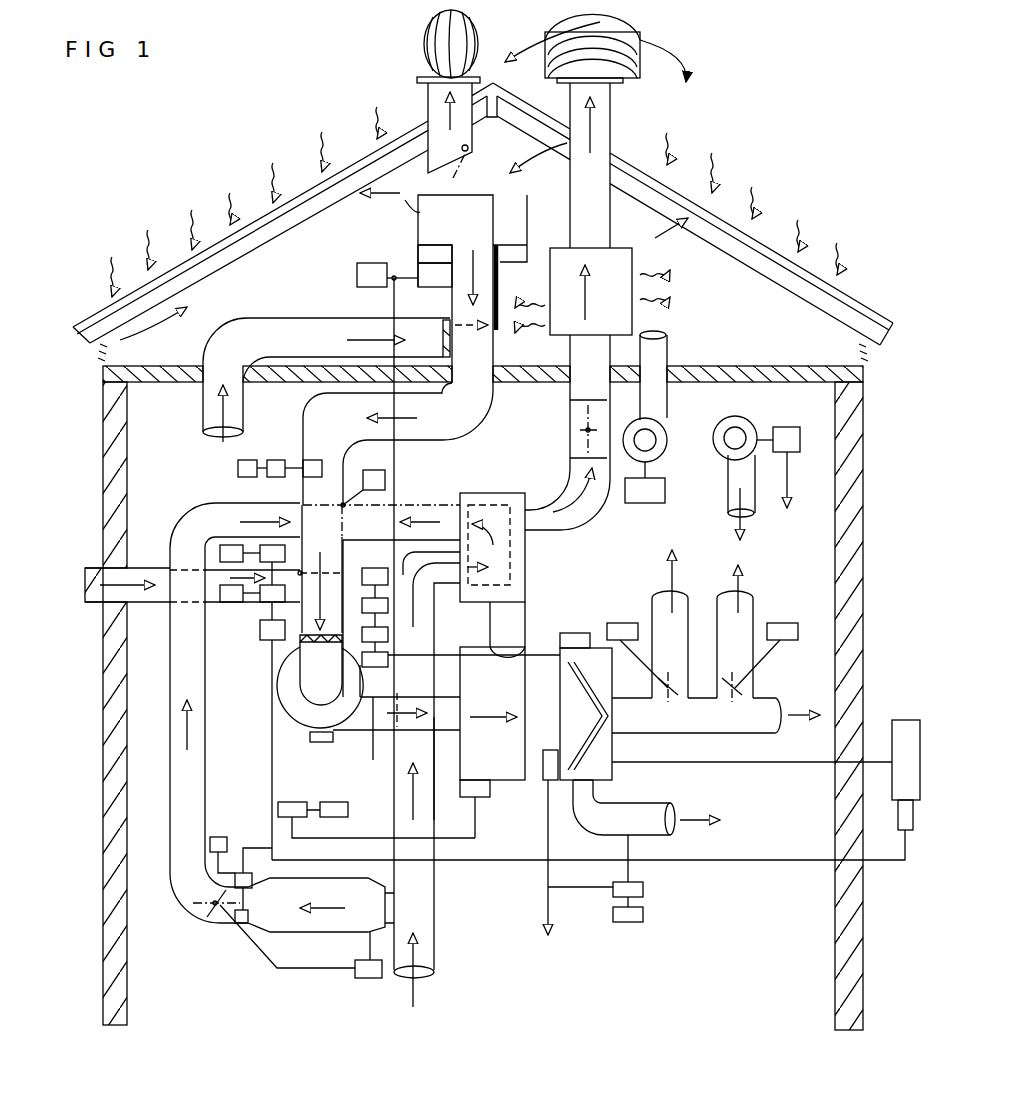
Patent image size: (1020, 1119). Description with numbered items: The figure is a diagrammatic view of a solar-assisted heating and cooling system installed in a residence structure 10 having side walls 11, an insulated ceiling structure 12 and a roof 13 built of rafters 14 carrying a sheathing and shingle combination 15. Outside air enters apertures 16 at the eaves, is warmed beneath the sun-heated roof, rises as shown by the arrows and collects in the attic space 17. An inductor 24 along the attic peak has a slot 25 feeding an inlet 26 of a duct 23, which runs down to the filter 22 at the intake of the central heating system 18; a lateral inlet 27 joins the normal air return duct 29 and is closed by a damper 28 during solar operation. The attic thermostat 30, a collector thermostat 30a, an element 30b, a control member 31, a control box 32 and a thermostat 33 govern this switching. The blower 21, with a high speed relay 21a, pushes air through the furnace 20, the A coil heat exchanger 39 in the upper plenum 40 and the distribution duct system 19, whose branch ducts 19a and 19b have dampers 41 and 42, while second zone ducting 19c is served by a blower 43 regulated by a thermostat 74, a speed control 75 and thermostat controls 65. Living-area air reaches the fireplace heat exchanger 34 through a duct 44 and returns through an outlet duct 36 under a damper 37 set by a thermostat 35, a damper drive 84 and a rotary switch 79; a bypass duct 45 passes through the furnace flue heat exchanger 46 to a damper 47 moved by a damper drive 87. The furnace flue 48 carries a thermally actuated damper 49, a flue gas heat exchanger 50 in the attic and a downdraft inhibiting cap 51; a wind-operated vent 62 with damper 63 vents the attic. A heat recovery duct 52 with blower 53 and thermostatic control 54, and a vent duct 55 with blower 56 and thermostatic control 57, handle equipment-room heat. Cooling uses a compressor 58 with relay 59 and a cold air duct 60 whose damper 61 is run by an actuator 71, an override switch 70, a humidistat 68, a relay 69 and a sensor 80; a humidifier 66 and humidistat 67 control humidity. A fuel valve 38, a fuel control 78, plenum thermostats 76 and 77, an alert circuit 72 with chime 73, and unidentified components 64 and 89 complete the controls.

The residence structure 10 is at (292, 115).
The side walls 11 is at (103, 455).
The ceiling structure 12 is at (740, 366).
The roof 13 is at (807, 262).
The rafters 14 is at (688, 230).
The sheathing and shingle combination 15 is at (252, 215).
The apertures 16 is at (95, 355).
The attic space 17 is at (289, 298).
The central heating system 18 is at (532, 832).
The distribution duct system 19 is at (755, 698).
The branch duct 19a is at (753, 600).
The branch duct 19b is at (652, 600).
The second zone ducting 19c is at (655, 835).
The furnace 20 is at (501, 761).
The blower 21 is at (303, 720).
The high speed relay 21a is at (330, 745).
The filter 22 is at (334, 685).
The duct 23 is at (480, 422).
The inductor 24 is at (390, 198).
The slot 25 is at (523, 228).
The inlet 26 is at (469, 238).
The lateral inlet 27 is at (450, 345).
The damper 28 is at (445, 332).
The normal air return duct 29 is at (304, 351).
The temperature sensing and control device 30 is at (418, 280).
The thermostat 30a is at (432, 250).
The damper blade 30b is at (432, 270).
The control member 31 is at (357, 275).
The control box 32 is at (412, 625).
The thermostat 33 is at (512, 265).
The fireplace heat exchanger 34 is at (334, 903).
The thermostat 35 is at (238, 873).
The outlet duct 36 is at (168, 815).
The damper 37 is at (222, 910).
The fossil fuel valve 38 is at (485, 797).
The A coil heat exchanger 39 is at (603, 765).
The upper plenum 40 is at (604, 685).
The damper 41 is at (670, 695).
The damper 42 is at (735, 695).
The blower 43 is at (592, 835).
The duct 44 is at (435, 937).
The bypass duct 45 is at (435, 820).
The furnace flue heat exchanger 46 is at (525, 580).
The damper 47 is at (381, 521).
The furnace flue 48 is at (578, 530).
The thermally actuated damper 49 is at (570, 455).
The flue gas heat exchanger 50 is at (624, 313).
The downdraft inhibiting cap 51 is at (645, 45).
The duct 52 is at (727, 495).
The blower 53 is at (742, 422).
The thermostatic control 54 is at (787, 427).
The duct 55 is at (667, 350).
The blower 56 is at (660, 440).
The thermostatic control 57 is at (665, 490).
The air conditioning compressor 58 is at (921, 765).
The compressor relay 59 is at (913, 815).
The cold air duct 60 is at (170, 605).
The damper 61 is at (310, 575).
The wind-operated vent 62 is at (427, 98).
The damper 63 is at (480, 155).
The sensors 64 is at (362, 572).
The thermostat controls 65 is at (713, 912).
The humidifier 66 is at (238, 468).
The humidistat 67 is at (312, 460).
The humidistat 68 is at (235, 602).
The relay 69 is at (268, 640).
The override switch 70 is at (222, 548).
The actuator 71 is at (280, 545).
The alert circuit 72 is at (280, 802).
The chime 73 is at (328, 802).
The thermostat 74 is at (643, 890).
The speed control 75 is at (643, 912).
The thermostat 76 is at (545, 775).
The thermostat 77 is at (565, 633).
The fuel control 78 is at (388, 663).
The rotary switch 79 is at (368, 978).
The thermostat sensor 80 is at (265, 602).
The damper drive 84 is at (218, 837).
The damper drive 87 is at (385, 475).
The sensor 89 is at (276, 460).